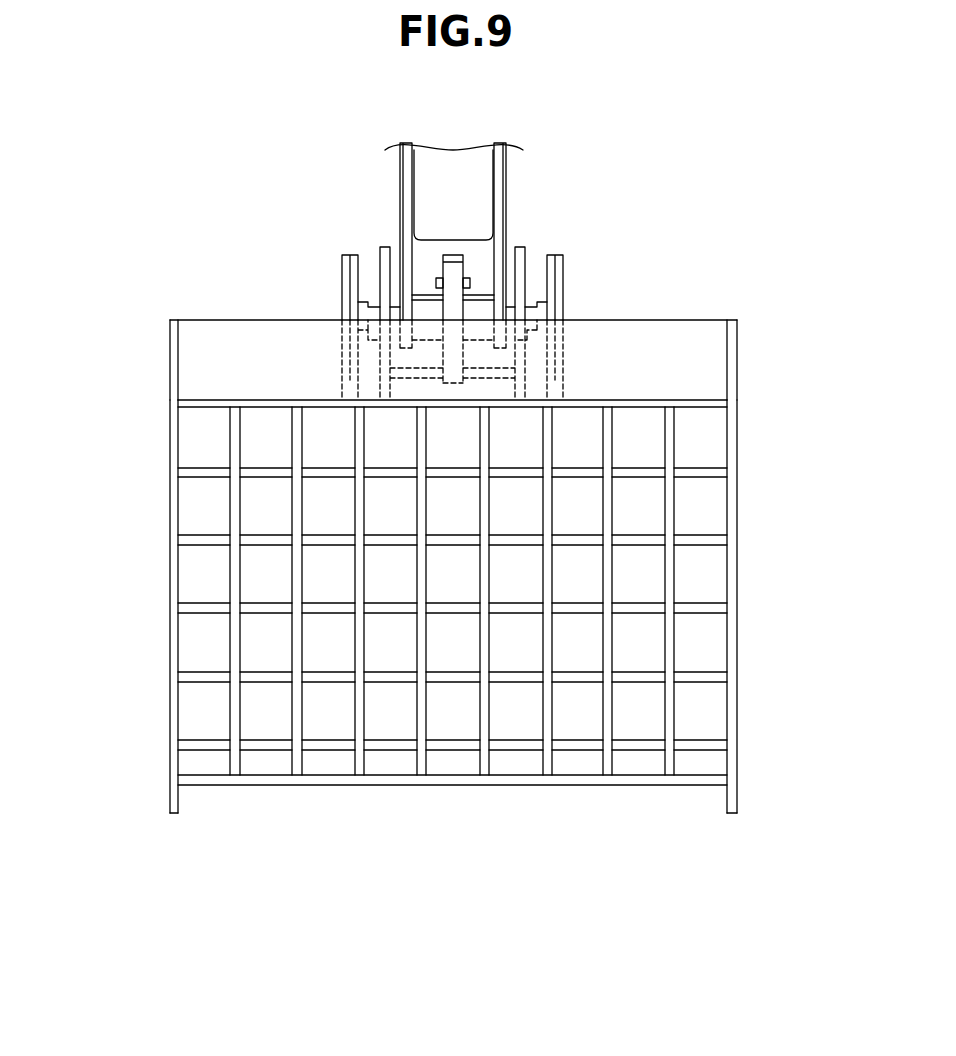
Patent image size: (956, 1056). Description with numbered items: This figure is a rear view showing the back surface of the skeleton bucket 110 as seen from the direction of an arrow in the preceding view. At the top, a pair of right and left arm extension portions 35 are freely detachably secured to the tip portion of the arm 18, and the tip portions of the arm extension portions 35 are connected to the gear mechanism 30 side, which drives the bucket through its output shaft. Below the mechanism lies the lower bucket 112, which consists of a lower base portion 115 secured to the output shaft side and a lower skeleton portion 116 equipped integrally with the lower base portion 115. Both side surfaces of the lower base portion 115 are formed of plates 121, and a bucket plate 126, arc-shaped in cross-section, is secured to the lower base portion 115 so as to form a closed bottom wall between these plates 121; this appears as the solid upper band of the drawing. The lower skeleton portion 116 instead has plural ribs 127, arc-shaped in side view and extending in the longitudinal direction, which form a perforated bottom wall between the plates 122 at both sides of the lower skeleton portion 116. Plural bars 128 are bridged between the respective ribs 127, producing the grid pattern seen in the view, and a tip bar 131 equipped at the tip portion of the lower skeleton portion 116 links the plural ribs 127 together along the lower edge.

The arm 18 is at (465, 168).
The arm extension portions 35 is at (407, 190).
The gear mechanism 30 is at (442, 308).
The skeleton bucket 110 is at (158, 350).
The lower base portion 115 is at (210, 311).
The bucket plate 126 is at (658, 340).
The plates 121 is at (158, 384).
The plates 122 is at (168, 645).
The lower bucket 112 is at (158, 483).
The lower skeleton portion 116 is at (157, 597).
The bars 128 is at (262, 480).
The ribs 127 is at (240, 715).
The tip bar 131 is at (510, 785).